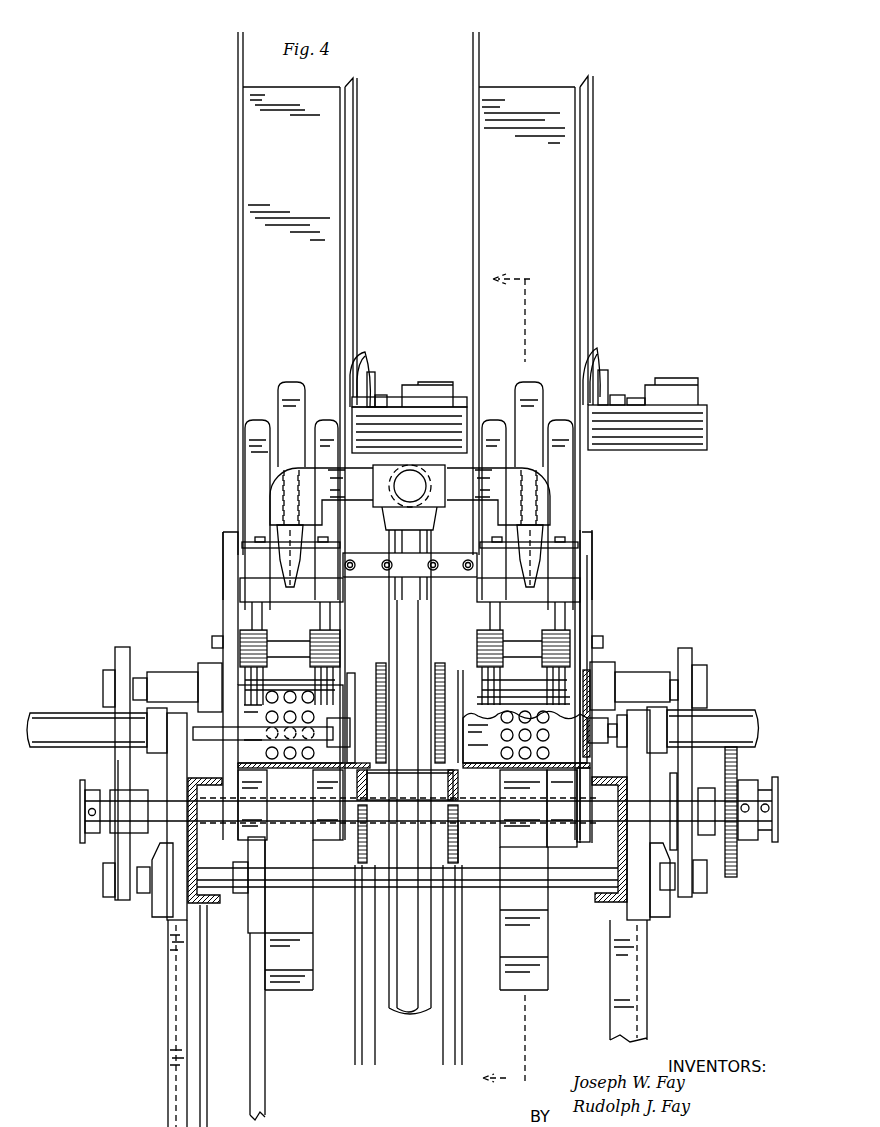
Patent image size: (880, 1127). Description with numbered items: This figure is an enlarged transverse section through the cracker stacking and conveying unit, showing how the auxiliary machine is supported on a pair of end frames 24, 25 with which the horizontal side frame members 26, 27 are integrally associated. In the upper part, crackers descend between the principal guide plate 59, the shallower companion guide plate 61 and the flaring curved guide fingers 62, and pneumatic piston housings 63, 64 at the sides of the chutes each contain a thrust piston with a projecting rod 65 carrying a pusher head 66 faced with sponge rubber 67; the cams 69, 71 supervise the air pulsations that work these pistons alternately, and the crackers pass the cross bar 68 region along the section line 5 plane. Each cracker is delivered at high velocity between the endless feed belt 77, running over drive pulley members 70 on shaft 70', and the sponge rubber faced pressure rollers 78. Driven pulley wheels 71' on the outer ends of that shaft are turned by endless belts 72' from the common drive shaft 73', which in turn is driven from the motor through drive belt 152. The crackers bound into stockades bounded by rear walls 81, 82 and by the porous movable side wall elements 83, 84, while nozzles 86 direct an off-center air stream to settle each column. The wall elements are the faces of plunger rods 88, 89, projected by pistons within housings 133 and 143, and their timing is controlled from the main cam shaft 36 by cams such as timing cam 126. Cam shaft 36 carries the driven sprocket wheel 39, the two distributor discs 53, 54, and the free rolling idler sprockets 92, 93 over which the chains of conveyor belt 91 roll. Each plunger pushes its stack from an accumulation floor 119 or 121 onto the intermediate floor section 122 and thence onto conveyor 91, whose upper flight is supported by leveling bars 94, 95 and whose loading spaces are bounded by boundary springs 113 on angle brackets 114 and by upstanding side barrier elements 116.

The section line 5- 5 is at (516, 676).
The end frame 24 is at (647, 997).
The end frame 25 is at (168, 1030).
The horizontal side frame member 26 is at (618, 845).
The horizontal side frame member 27 is at (205, 905).
The main cam shaft 36 is at (152, 800).
The driven sprocket wheel 39 is at (737, 868).
The distributor disc 53 is at (548, 958).
The distributor disc 54 is at (310, 964).
The principal guide plate 59 is at (237, 318).
The companion guide plate 61 is at (358, 250).
The curved guide finger 62 is at (291, 380).
The pneumatic piston housing 63 is at (680, 395).
The pneumatic piston housing 64 is at (428, 398).
The projecting rod 65 is at (382, 397).
The pusher head 66 is at (375, 400).
The sponge rubber layer 67 is at (362, 398).
The cross bar 68 is at (464, 400).
The cam 69 is at (773, 797).
The drive pulley member 70 is at (523, 703).
The pulley shaft 70' is at (409, 671).
The cam 71 is at (403, 815).
The driven pulley wheel 71' is at (408, 764).
The endless belt 72' is at (385, 828).
The common drive shaft 73' is at (404, 885).
The endless feed belt 77 is at (330, 669).
The pressure roller 78 is at (243, 637).
The rear wall 81 is at (563, 752).
The rear wall 82 is at (325, 757).
The movable side wall element 83 is at (583, 737).
The movable side wall element 84 is at (353, 712).
The nozzle 86 is at (290, 581).
The plunger rod 88 is at (605, 746).
The plunger rod 89 is at (212, 742).
The conveyor belt 91 is at (443, 1046).
The idler sprocket 92 is at (458, 856).
The idler sprocket 93 is at (358, 855).
The leveling bar 94 is at (458, 803).
The leveling bar 95 is at (359, 795).
The boundary spring 113 is at (384, 668).
The angle bracket 114 is at (389, 762).
The side barrier element 116 is at (461, 673).
The accumulation floor 119 is at (530, 768).
The accumulation floor 121 is at (296, 766).
The intermediate floor section 122 is at (428, 776).
The timing cam 126 is at (712, 838).
The piston housing 133 is at (56, 723).
The piston housing 143 is at (736, 718).
The drive belt 152 is at (265, 1050).